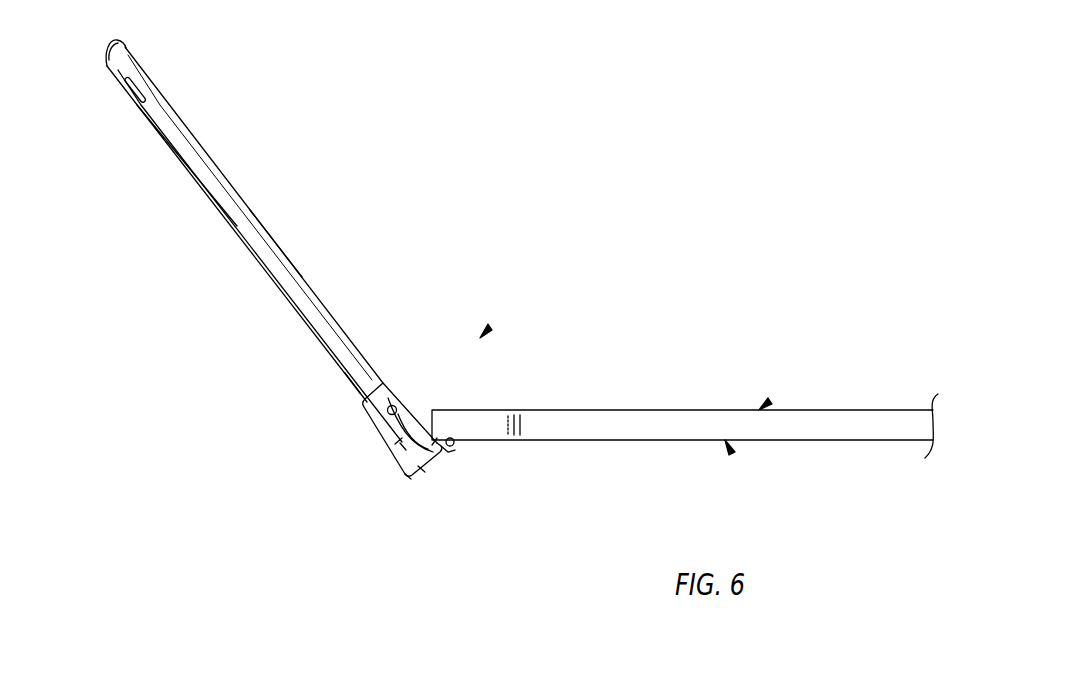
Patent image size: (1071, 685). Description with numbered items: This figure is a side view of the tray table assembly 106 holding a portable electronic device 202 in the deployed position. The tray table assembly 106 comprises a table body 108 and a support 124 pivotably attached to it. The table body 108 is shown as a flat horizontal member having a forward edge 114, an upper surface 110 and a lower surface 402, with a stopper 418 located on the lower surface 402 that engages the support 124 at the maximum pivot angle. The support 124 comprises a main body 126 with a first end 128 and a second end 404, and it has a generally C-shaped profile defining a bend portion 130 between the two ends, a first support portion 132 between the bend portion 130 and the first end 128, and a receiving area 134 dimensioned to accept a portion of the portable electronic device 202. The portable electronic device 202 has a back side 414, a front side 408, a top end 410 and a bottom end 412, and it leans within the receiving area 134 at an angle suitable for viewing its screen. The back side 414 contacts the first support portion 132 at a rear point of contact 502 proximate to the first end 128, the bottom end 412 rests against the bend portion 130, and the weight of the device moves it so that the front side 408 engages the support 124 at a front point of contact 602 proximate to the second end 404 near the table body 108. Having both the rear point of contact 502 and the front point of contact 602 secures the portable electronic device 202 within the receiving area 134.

The tray table assembly 106 is at (490, 329).
The table body 108 is at (655, 420).
The upper surface 110 is at (770, 400).
The forward edge 114 is at (437, 438).
The support 124 is at (372, 428).
The main body 126 is at (408, 482).
The first end 128 is at (360, 396).
The bend portion 130 is at (423, 470).
The first support portion 132 is at (394, 456).
The receiving area 134 is at (396, 458).
The portable electronic device 202 is at (192, 128).
The lower surface 402 is at (732, 453).
The second end 404 is at (439, 440).
The front side 408 is at (301, 276).
The top end 410 is at (108, 44).
The bottom end 412 is at (452, 456).
The back side 414 is at (236, 228).
The stopper 418 is at (455, 440).
The rear point of contact 502 is at (390, 403).
The front point of contact 602 is at (456, 446).